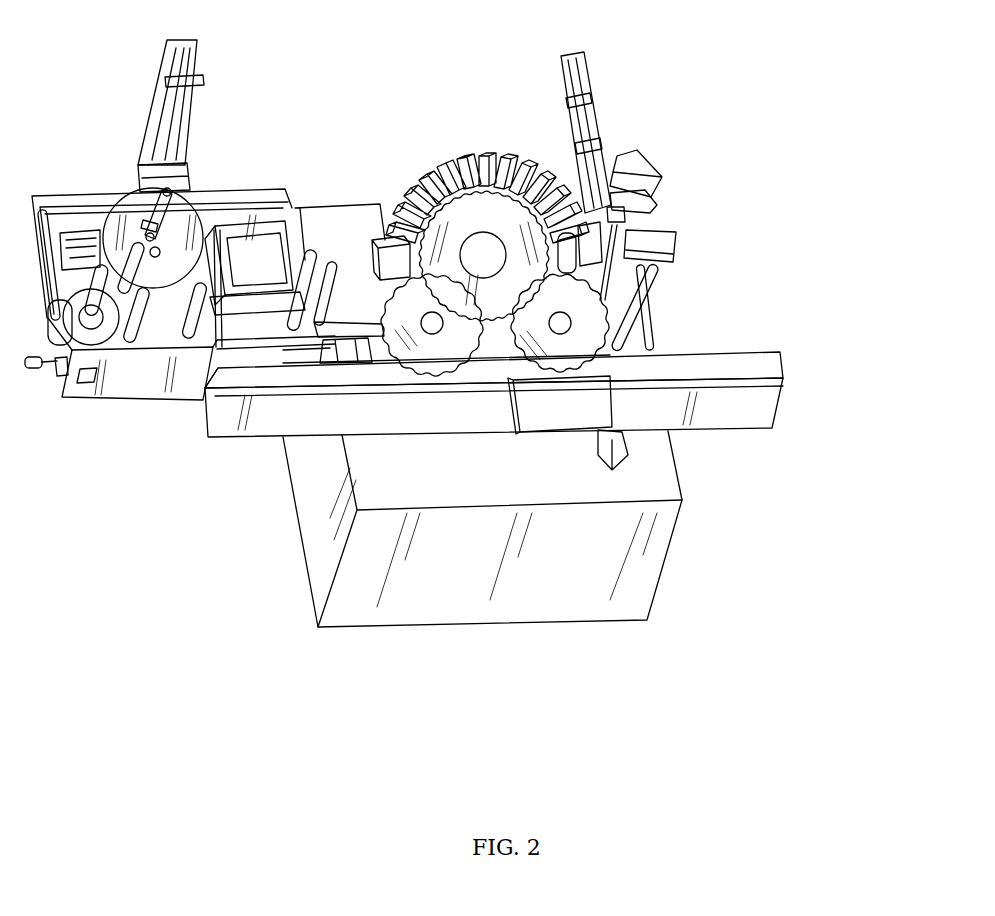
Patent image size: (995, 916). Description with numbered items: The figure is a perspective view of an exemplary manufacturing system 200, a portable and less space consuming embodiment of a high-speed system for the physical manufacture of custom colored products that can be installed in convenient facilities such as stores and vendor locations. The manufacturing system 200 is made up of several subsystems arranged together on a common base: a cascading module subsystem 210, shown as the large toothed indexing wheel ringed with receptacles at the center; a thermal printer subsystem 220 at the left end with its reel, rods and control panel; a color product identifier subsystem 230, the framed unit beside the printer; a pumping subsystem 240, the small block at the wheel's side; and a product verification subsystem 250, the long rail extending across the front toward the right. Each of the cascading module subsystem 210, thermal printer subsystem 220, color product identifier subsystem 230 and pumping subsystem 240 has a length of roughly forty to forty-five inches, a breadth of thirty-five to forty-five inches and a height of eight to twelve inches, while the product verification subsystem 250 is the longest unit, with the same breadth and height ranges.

The manufacturing system 200 is at (735, 83).
The cascading module subsystem 210 is at (487, 197).
The thermal printer subsystem 220 is at (58, 198).
The color product identifier subsystem 230 is at (247, 240).
The pumping subsystem 240 is at (383, 253).
The product verification subsystem 250 is at (753, 367).